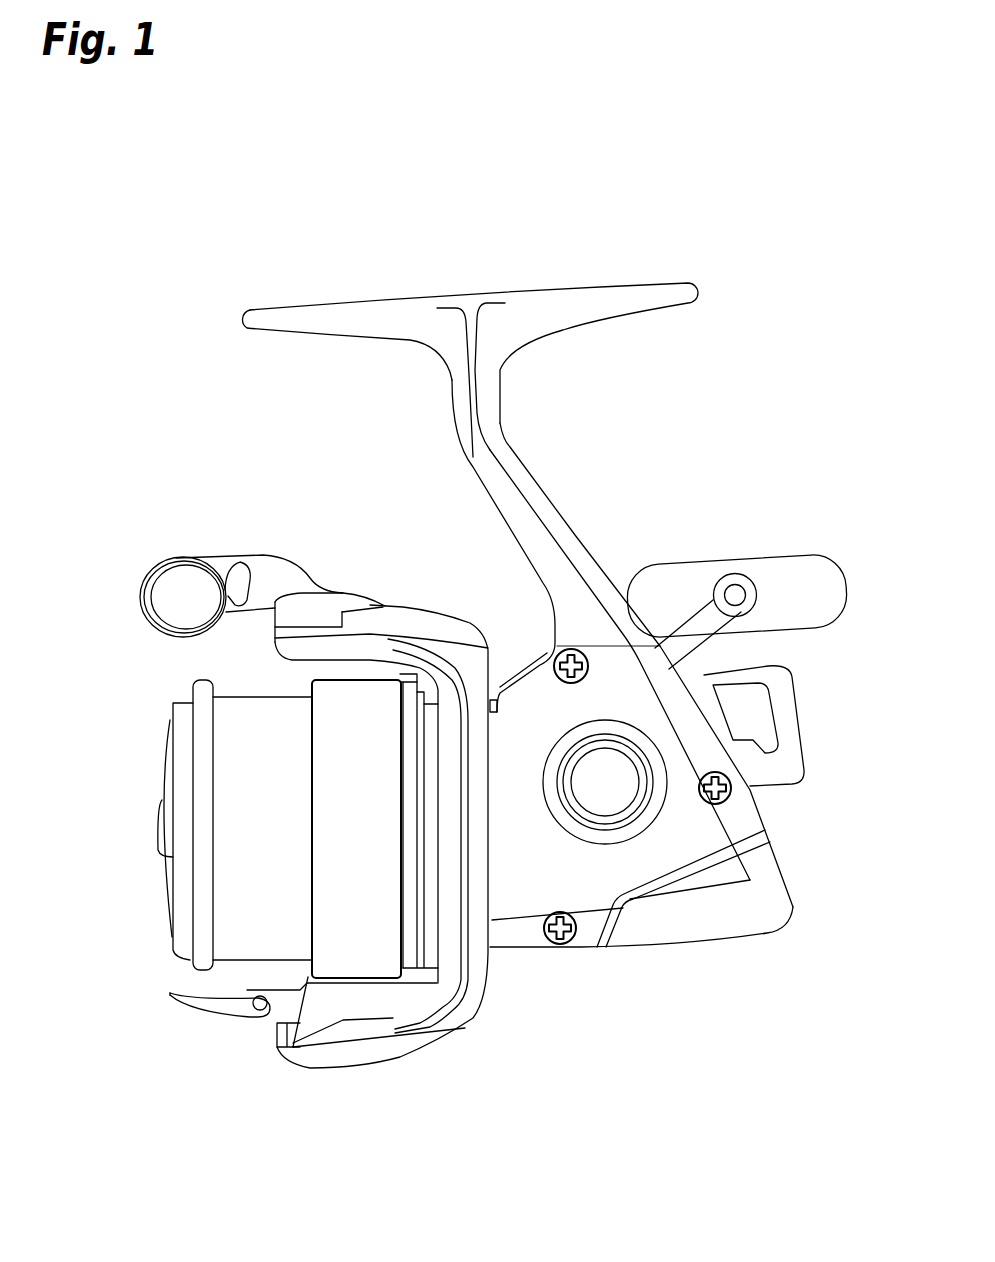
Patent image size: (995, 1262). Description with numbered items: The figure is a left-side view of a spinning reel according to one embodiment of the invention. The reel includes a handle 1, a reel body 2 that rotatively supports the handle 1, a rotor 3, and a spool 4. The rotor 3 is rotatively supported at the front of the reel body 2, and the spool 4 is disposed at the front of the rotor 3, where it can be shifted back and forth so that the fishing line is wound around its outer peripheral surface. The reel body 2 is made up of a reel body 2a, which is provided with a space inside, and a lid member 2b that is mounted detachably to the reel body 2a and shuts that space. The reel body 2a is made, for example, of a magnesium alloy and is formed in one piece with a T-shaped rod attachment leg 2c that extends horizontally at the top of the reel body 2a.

The handle 1 is at (712, 560).
The reel body 2 is at (733, 808).
The reel body 2a is at (583, 632).
The lid member 2b is at (698, 840).
The rod attachment leg 2c is at (607, 305).
The rotor 3 is at (473, 1007).
The spool 4 is at (237, 943).